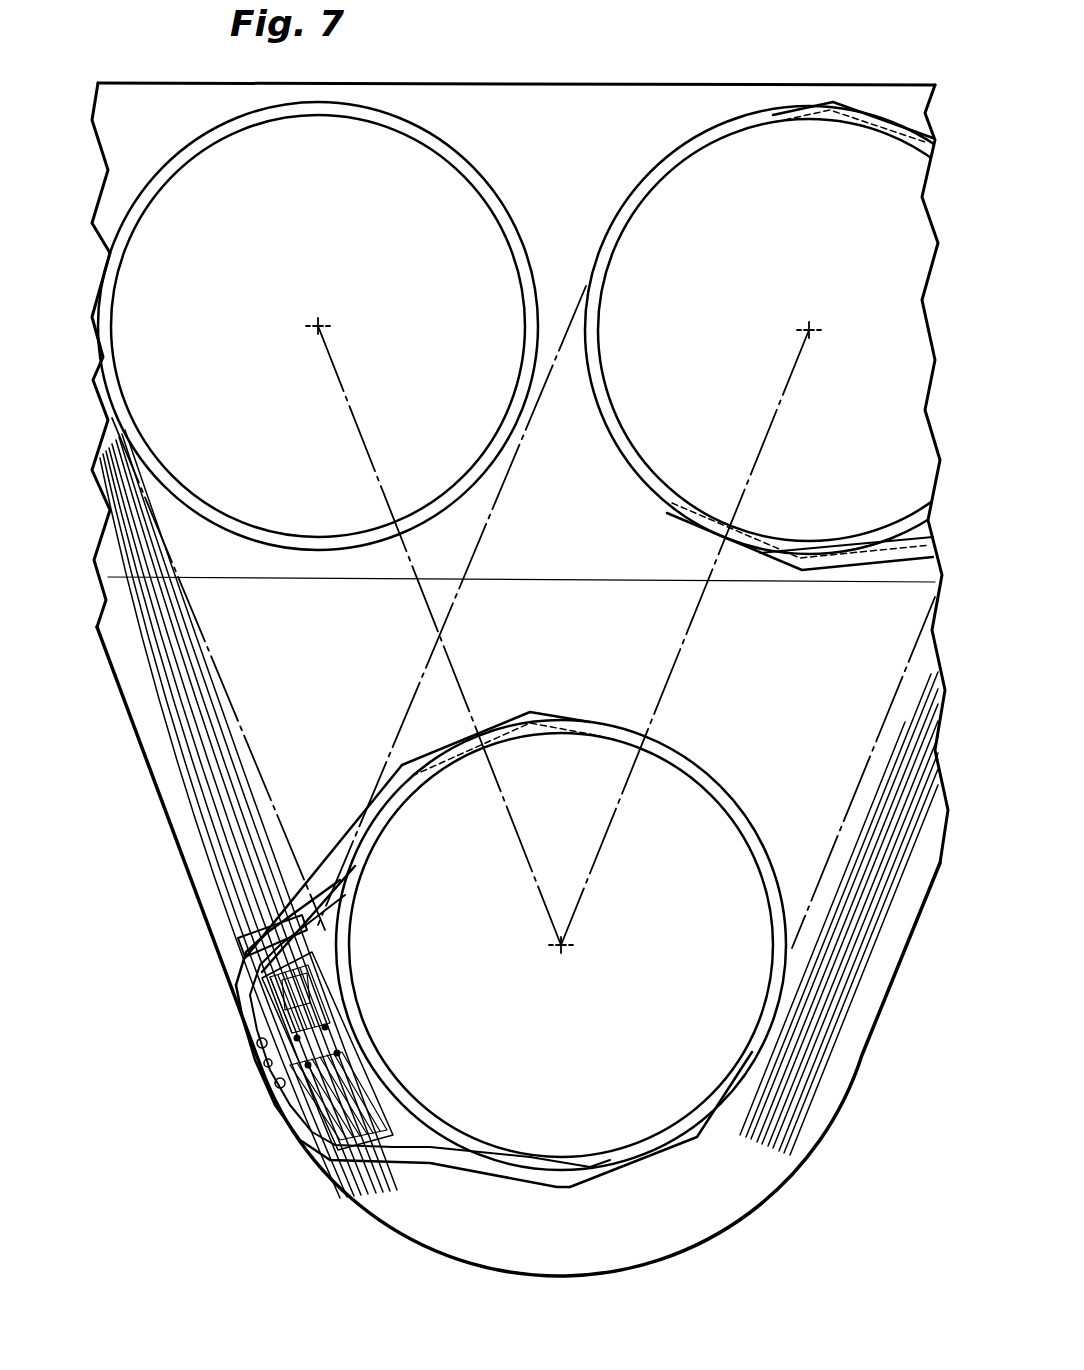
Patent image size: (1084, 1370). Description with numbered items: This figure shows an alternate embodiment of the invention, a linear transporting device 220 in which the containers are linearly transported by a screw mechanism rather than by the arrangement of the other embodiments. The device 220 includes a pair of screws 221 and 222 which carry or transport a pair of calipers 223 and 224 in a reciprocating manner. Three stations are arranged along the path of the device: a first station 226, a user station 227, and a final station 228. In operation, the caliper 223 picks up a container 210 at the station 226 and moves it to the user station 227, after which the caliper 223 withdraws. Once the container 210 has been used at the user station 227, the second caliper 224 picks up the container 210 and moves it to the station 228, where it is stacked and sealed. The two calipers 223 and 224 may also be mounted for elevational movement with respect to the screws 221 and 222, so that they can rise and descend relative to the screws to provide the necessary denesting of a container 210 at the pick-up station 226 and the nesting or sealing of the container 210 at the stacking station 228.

The container 210 is at (718, 785).
The linear transporting device 220 is at (627, 70).
The screw 221 is at (913, 722).
The screw 222 is at (178, 668).
The caliper 223 is at (825, 563).
The caliper 224 is at (343, 843).
The station 226 is at (679, 147).
The user station 227 is at (606, 722).
The station 228 is at (456, 157).